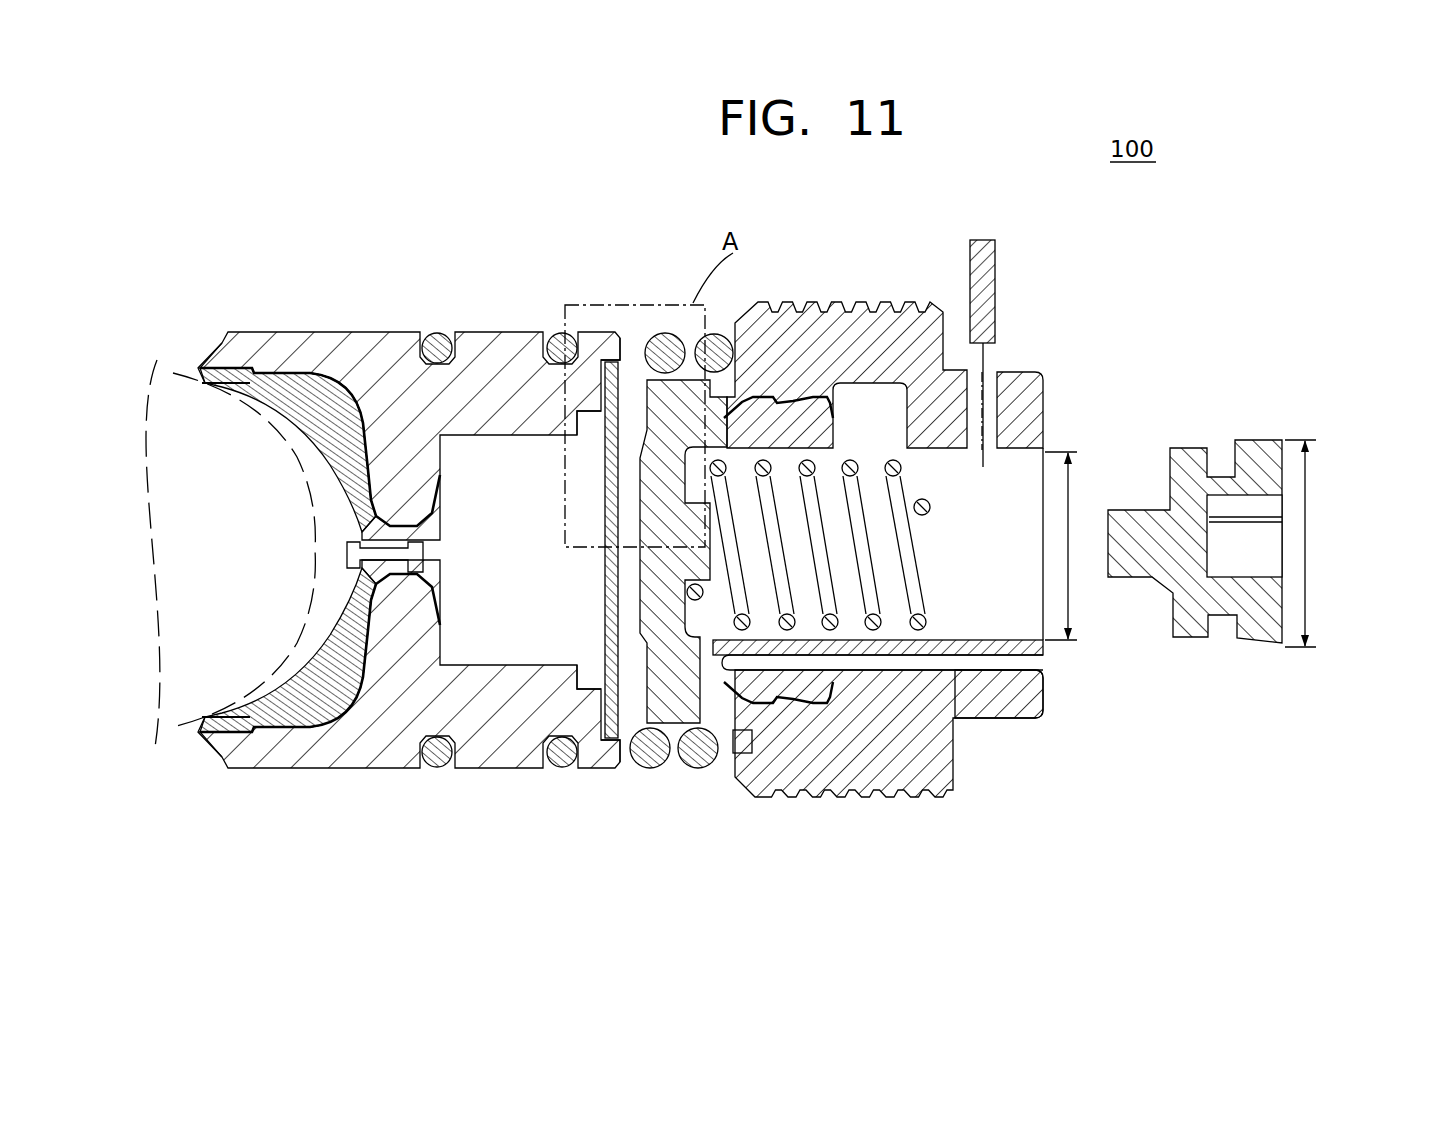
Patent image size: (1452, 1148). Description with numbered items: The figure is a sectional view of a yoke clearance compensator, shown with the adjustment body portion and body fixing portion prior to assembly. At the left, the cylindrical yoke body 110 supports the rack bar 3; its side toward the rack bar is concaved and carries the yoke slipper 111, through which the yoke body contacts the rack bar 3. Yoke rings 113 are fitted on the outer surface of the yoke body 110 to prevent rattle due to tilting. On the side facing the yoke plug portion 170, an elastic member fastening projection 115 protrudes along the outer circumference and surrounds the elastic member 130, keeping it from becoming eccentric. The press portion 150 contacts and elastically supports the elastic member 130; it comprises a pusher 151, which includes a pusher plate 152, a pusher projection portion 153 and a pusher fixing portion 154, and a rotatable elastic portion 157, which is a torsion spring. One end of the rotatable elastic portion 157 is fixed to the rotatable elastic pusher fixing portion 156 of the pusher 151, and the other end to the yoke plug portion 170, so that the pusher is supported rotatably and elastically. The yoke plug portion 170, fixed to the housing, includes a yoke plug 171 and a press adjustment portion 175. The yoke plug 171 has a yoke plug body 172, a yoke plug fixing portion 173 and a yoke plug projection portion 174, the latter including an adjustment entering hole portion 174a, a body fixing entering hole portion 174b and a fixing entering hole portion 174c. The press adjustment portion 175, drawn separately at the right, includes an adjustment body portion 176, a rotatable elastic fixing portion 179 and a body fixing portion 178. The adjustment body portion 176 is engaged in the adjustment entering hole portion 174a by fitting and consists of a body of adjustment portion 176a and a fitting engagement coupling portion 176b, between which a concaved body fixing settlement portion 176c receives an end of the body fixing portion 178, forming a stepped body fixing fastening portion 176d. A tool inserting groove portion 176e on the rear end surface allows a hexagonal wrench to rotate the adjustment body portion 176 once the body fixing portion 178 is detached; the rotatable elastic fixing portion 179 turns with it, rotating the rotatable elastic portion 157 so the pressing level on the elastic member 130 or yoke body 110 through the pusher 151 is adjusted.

The rack bar 3 is at (178, 372).
The yoke body 110 is at (425, 504).
The yoke slipper 111 is at (287, 388).
The yoke ring 113 is at (441, 333).
The elastic member fastening projection 115 is at (615, 343).
The elastic member 130 is at (577, 413).
The press portion 150 is at (730, 623).
The pusher 151 is at (681, 610).
The pusher plate 152 is at (665, 712).
The pusher projection portion 153 is at (607, 738).
The pusher fixing portion 154 is at (712, 762).
The rotatable elastic pusher fixing portion 156 is at (717, 663).
The rotatable elastic portion 157 is at (822, 590).
The yoke plug portion 170 is at (903, 520).
The yoke plug 171 is at (903, 581).
The yoke plug body 172 is at (943, 760).
The yoke plug fixing portion 173 is at (885, 793).
The yoke plug projection portion 174 is at (958, 564).
The adjustment entering hole portion 174a is at (988, 642).
The body fixing entering hole portion 174b is at (1007, 447).
The fixing entering hole portion 174c is at (993, 668).
The press adjustment portion 175 is at (1065, 498).
The adjustment body portion 176 is at (1263, 476).
The body of adjustment portion 176a is at (1183, 457).
The fitting engagement coupling portion 176b is at (1247, 443).
The body fixing settlement portion 176c is at (1217, 450).
The body fixing fastening portion 176d is at (1227, 450).
The tool inserting groove portion 176e is at (1233, 507).
The body fixing portion 178 is at (990, 288).
The rotatable elastic fixing portion 179 is at (1130, 535).